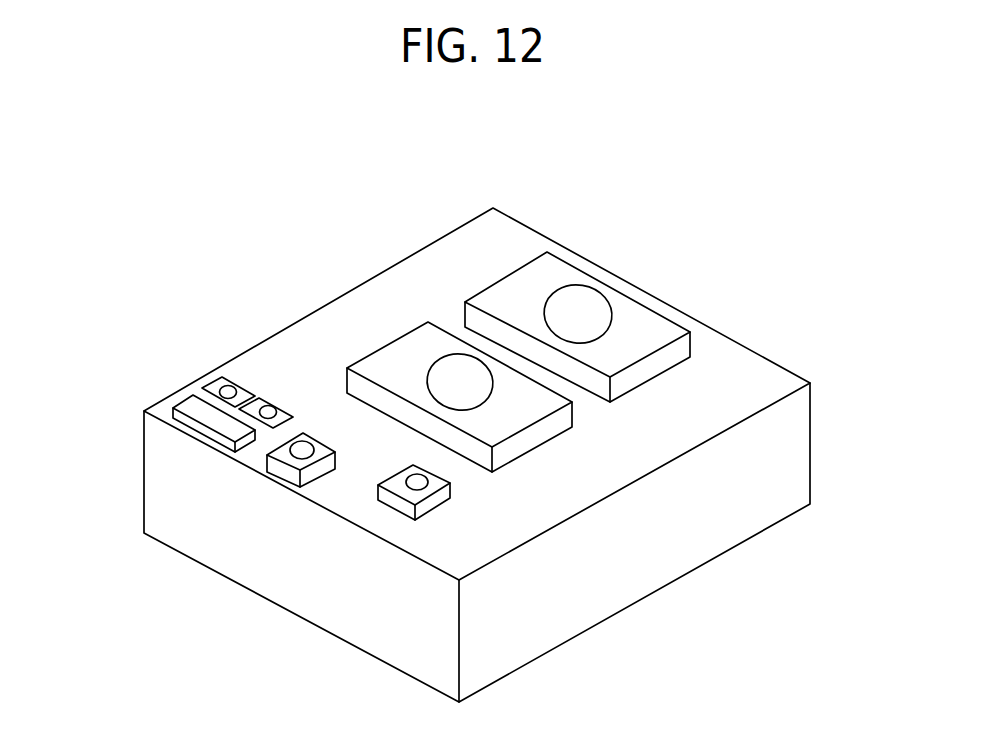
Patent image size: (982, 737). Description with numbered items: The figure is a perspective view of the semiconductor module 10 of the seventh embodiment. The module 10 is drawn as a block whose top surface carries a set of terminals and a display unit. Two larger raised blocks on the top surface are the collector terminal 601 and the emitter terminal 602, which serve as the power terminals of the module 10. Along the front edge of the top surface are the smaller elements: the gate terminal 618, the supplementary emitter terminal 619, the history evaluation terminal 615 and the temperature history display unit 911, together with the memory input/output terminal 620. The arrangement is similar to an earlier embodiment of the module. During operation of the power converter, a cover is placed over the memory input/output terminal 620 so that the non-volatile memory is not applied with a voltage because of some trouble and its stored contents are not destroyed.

The semiconductor module 10 is at (732, 377).
The collector terminal 601 is at (625, 307).
The emitter terminal 602 is at (413, 353).
The history evaluation terminal 615 is at (267, 410).
The temperature history display unit 911 is at (228, 390).
The gate terminal 618 is at (412, 482).
The supplementary emitter terminal 619 is at (302, 450).
The memory input/output terminal 620 is at (197, 435).